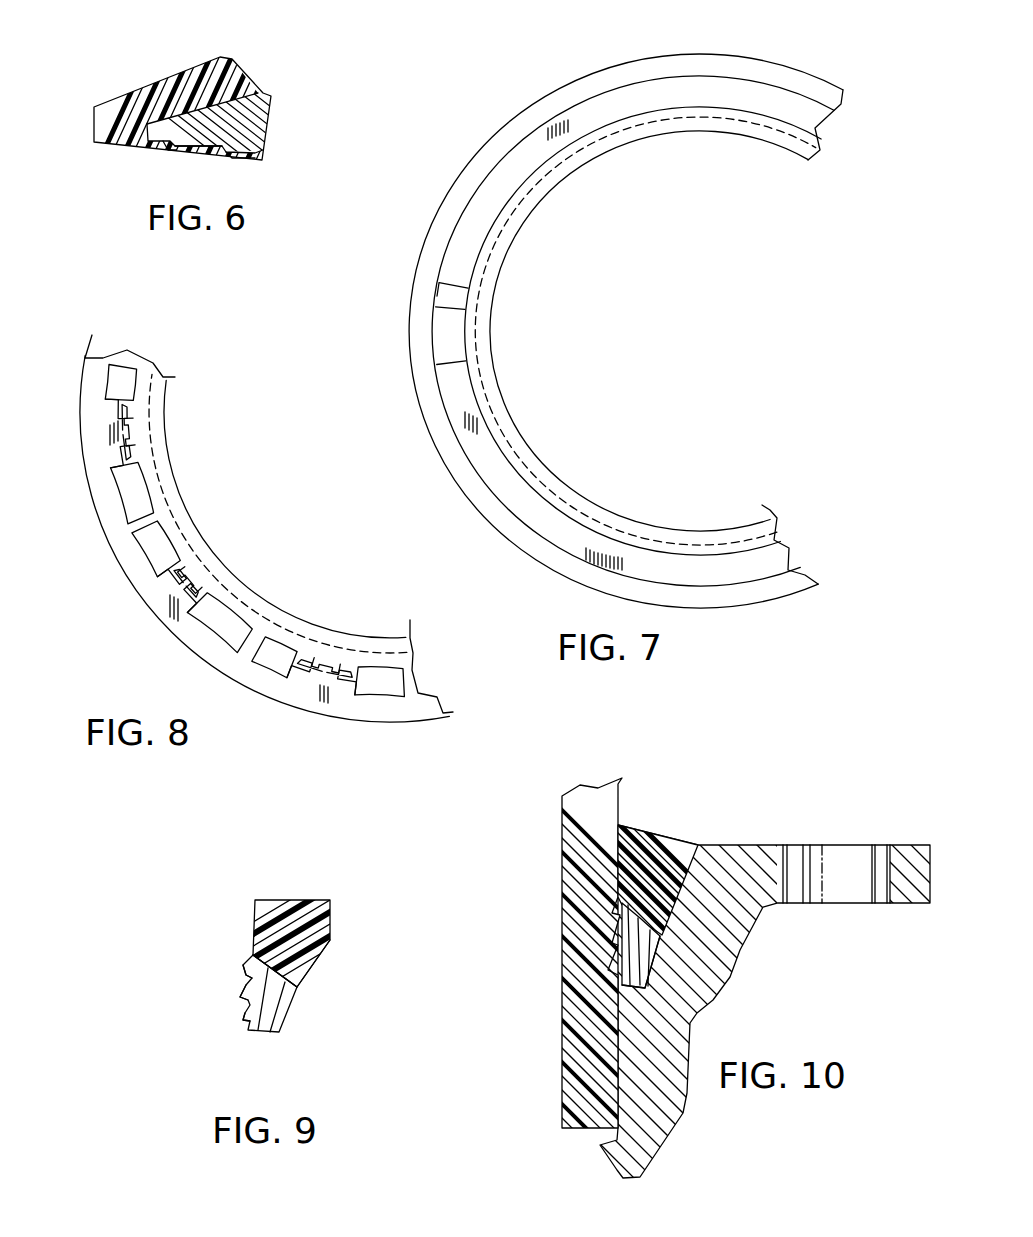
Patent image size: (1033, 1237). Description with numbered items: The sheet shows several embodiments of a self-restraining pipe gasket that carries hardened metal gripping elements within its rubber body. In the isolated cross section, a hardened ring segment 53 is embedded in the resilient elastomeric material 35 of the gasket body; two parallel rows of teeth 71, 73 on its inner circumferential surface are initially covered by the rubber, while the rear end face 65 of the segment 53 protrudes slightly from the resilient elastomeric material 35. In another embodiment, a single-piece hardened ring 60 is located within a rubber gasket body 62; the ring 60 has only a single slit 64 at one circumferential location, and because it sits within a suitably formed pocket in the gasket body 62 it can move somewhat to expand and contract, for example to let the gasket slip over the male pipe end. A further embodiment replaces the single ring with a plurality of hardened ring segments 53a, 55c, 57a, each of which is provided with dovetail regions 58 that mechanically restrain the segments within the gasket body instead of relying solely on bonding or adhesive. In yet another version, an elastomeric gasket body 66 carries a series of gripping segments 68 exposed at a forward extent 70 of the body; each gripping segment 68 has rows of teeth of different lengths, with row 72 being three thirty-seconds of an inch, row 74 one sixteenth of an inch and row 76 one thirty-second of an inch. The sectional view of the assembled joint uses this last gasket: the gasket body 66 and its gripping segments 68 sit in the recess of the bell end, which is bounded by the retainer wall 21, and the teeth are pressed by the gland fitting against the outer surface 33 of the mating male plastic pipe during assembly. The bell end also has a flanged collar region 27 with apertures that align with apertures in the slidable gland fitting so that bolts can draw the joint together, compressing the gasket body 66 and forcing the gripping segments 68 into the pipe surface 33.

In FIG. 6, the resilient elastomeric material 35 is at (248, 70).
In FIG. 6, the ring segment 53 is at (256, 74).
In FIG. 6, the rear end face 65 is at (268, 133).
In FIG. 6, the row of teeth 71 is at (167, 145).
In FIG. 6, the row of teeth 73 is at (232, 152).
In FIG. 7, the slit 64 is at (450, 290).
In FIG. 7, the hardened ring 60 is at (553, 522).
In FIG. 7, the rubber gasket body 62 is at (670, 597).
In FIG. 8, the ring segment 57a is at (132, 380).
In FIG. 8, the dovetail region 58 is at (120, 442).
In FIG. 8, the ring segment 55c is at (143, 550).
In FIG. 8, the ring segment 53a is at (273, 670).
In FIG. 9, the forward extent 70 is at (277, 965).
In FIG. 10, the forward extent 70 is at (640, 925).
In FIG. 9, the elastomeric gasket body 66 is at (323, 922).
In FIG. 10, the elastomeric gasket body 66 is at (645, 870).
In FIG. 9, the row 72 is at (243, 975).
In FIG. 9, the row 74 is at (240, 997).
In FIG. 9, the row 76 is at (242, 1028).
In FIG. 9, the gripping segment 68 is at (280, 997).
In FIG. 10, the gripping segment 68 is at (618, 938).
In FIG. 10, the outer surface 33 is at (618, 800).
In FIG. 10, the retainer wall 21 is at (620, 985).
In FIG. 10, the flanged collar region 27 is at (908, 903).